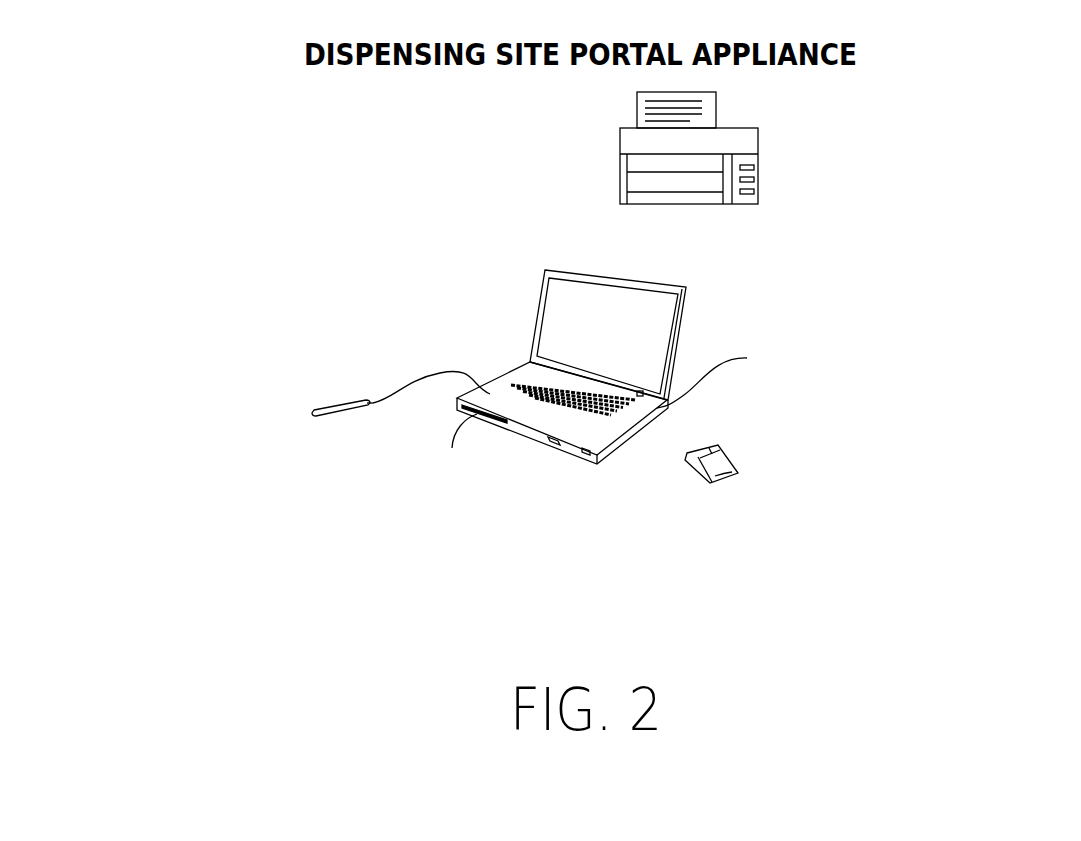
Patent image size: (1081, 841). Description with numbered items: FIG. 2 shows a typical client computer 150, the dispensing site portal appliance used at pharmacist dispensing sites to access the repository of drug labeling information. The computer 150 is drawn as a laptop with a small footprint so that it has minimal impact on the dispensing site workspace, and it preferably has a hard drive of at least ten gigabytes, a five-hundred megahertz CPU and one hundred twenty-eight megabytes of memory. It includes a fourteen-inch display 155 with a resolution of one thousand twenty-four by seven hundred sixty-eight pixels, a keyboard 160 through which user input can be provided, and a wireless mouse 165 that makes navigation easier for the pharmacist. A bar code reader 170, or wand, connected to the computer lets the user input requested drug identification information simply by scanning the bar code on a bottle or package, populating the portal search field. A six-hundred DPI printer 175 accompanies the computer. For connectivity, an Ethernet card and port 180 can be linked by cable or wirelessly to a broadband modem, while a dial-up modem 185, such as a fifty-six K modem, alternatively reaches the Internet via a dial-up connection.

The client computer 150 is at (468, 349).
The display 155 is at (562, 314).
The keyboard 160 is at (630, 427).
The wireless mouse 165 is at (722, 482).
The bar code reader 170 is at (343, 416).
The printer 175 is at (688, 164).
The Ethernet card and port 180 is at (541, 443).
The dial-up modem 185 is at (628, 440).